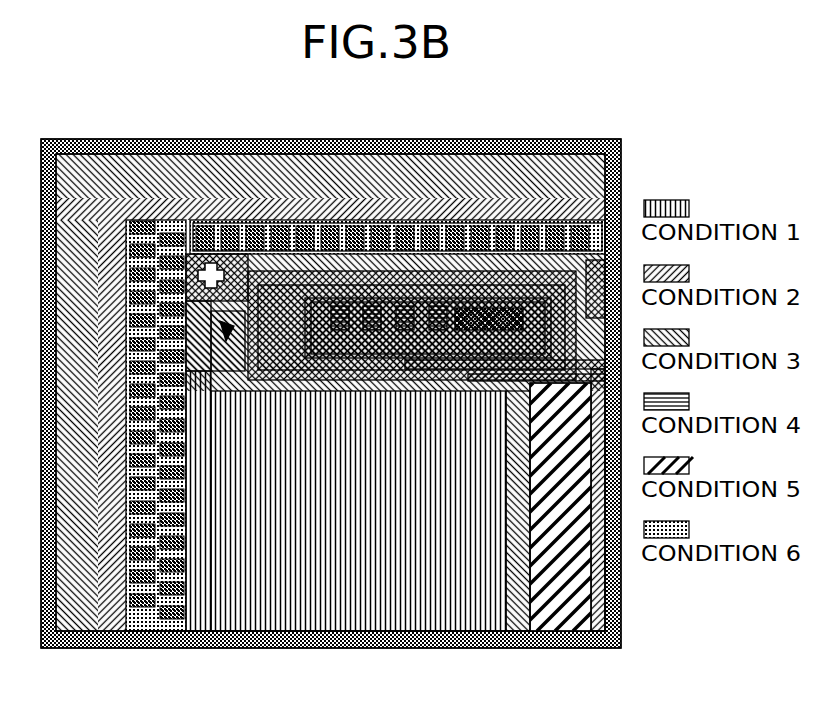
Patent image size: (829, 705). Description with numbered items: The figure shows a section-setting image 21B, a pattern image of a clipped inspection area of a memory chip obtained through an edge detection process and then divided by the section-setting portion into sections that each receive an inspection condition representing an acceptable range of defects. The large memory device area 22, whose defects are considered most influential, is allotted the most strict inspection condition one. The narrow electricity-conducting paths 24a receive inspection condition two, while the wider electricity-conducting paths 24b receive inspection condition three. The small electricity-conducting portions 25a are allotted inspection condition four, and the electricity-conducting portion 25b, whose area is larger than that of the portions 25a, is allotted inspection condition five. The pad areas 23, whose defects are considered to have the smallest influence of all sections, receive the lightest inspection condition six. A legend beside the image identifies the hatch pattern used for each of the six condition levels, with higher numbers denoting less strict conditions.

The section-setting image 21B is at (619, 148).
The memory device area 22 is at (403, 592).
The pad areas 23 is at (148, 215).
The electricity-conducting paths 24a is at (600, 372).
The electricity-conducting paths 24b is at (600, 263).
The electricity-conducting portions 25a is at (333, 298).
The electricity-conducting portion 25b is at (575, 603).